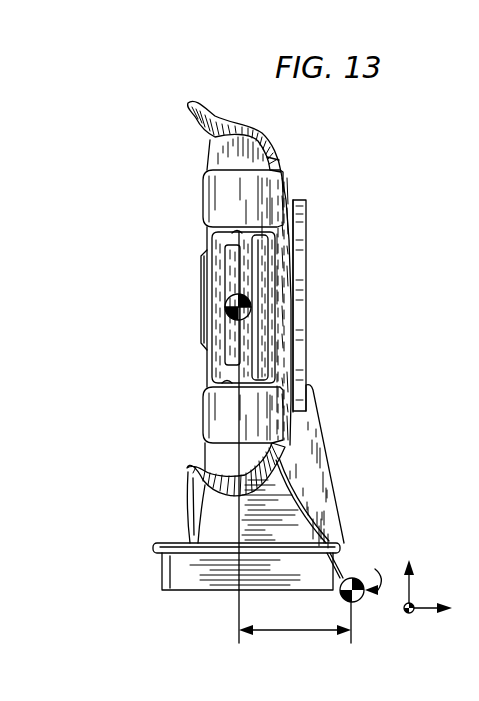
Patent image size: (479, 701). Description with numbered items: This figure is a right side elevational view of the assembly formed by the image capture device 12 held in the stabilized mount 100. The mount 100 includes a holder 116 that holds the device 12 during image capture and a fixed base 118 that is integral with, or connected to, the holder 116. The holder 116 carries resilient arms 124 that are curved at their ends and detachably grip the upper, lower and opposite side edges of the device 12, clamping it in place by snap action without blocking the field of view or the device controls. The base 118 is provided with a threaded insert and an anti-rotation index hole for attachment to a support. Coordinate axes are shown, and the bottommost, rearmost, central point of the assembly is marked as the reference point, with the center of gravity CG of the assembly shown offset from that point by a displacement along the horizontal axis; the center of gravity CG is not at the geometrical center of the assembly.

The image capture device 12 is at (200, 157).
The arms 124 is at (190, 102).
The holder 116 is at (325, 212).
The center of gravity CG is at (270, 312).
The stabilized mount 100 is at (345, 450).
The fixed base 118 is at (148, 577).